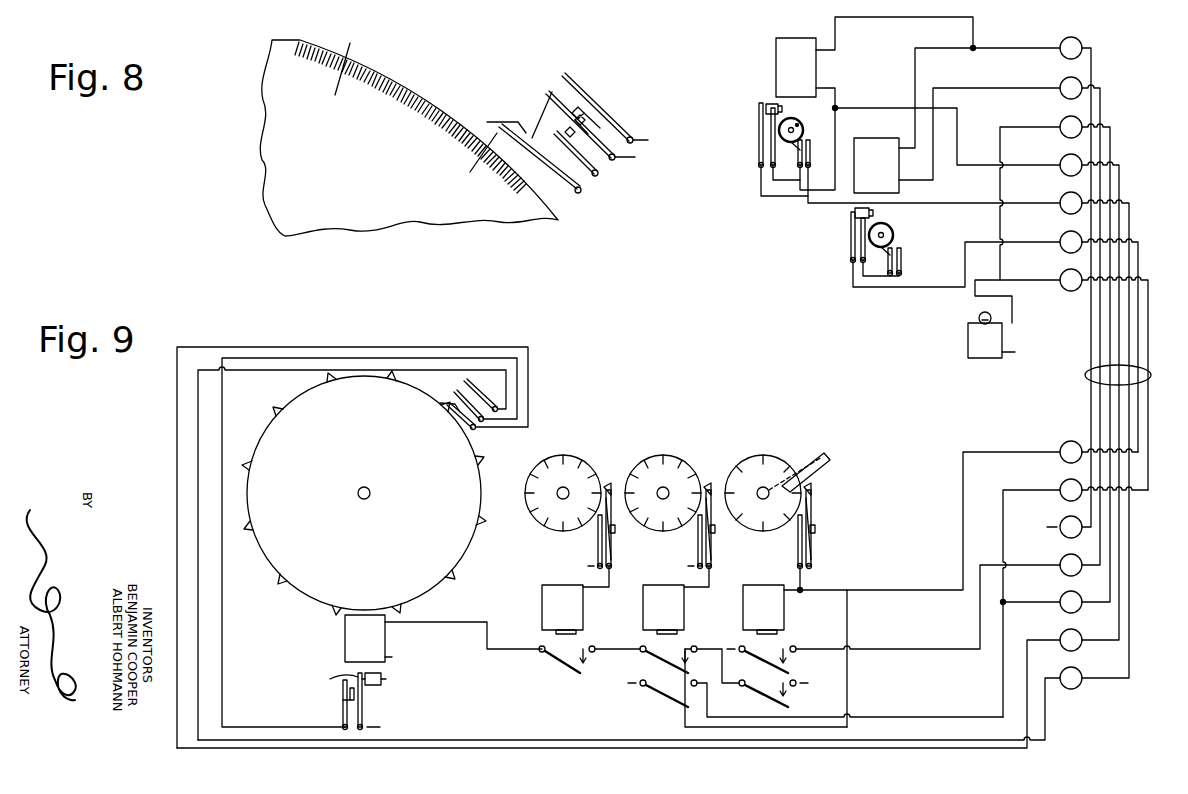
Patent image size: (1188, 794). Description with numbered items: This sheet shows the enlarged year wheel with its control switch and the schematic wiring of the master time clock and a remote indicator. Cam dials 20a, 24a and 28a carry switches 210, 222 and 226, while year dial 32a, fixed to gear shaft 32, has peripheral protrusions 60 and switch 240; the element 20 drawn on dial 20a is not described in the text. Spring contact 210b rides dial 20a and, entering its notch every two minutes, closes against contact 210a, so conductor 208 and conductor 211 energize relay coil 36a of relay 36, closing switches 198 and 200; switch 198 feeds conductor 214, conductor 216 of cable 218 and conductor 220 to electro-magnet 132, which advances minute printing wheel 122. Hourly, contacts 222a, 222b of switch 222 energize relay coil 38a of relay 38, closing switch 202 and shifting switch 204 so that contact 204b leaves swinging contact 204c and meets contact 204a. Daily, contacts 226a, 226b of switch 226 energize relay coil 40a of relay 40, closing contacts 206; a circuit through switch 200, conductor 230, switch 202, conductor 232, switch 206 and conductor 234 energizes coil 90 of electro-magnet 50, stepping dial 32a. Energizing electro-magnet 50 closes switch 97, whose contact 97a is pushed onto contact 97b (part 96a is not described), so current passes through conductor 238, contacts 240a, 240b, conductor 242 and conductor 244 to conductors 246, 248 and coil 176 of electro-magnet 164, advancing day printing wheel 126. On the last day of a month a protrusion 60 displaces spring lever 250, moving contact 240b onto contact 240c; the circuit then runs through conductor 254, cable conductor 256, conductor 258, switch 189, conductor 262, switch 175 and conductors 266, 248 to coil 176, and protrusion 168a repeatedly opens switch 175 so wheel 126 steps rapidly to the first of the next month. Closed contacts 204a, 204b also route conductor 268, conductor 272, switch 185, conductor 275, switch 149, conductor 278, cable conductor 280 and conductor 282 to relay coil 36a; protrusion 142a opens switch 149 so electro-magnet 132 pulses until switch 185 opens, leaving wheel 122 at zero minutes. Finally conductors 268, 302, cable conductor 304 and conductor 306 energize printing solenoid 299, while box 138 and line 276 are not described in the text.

In FIG. 9, the setting lever 20 is at (836, 456).
In FIG. 9, the cam dial 20a is at (769, 456).
In FIG. 9, the cam dial 24a is at (675, 456).
In FIG. 9, the cam dial 28a is at (573, 456).
In FIG. 9, the gear shaft 32 is at (370, 493).
In FIG. 8, the cam dial 32a is at (345, 44).
In FIG. 9, the cam dial 32a is at (465, 551).
In FIG. 9, the relay 36 is at (755, 597).
In FIG. 9, the relay coil 36a is at (771, 620).
In FIG. 9, the relay 38 is at (655, 597).
In FIG. 9, the relay coil 38a is at (671, 620).
In FIG. 9, the relay 40 is at (553, 597).
In FIG. 9, the relay coil 40a is at (570, 620).
In FIG. 9, the electro-magnet 50 is at (346, 689).
In FIG. 8, the protrusions 60 is at (500, 135).
In FIG. 9, the coil 90 is at (386, 622).
In FIG. 9, the contact bracket 96a is at (326, 678).
In FIG. 9, the switch 97 is at (348, 693).
In FIG. 9, the contact 97a is at (364, 696).
In FIG. 9, the contact 97b is at (350, 701).
In FIG. 9, the minute printing wheel 122 is at (893, 235).
In FIG. 9, the day printing wheel 126 is at (795, 125).
In FIG. 9, the electro-magnet 132 is at (888, 227).
In FIG. 9, the minutes clock mechanism 138 is at (876, 138).
In FIG. 9, the protrusion 142a is at (853, 214).
In FIG. 9, the switch 149 is at (851, 236).
In FIG. 9, the electro-magnet 164 is at (734, 88).
In FIG. 9, the protrusion 168a is at (766, 110).
In FIG. 9, the switch 175 is at (759, 136).
In FIG. 9, the coil 176 is at (776, 55).
In FIG. 9, the switch 185 is at (900, 258).
In FIG. 9, the switch 189 is at (802, 152).
In FIG. 9, the switch 198 is at (792, 657).
In FIG. 9, the switch 200 is at (793, 695).
In FIG. 9, the switch 202 is at (764, 686).
In FIG. 9, the switch 204 is at (656, 695).
In FIG. 9, the fixed contact 204a is at (688, 691).
In FIG. 9, the fixed contact 204b is at (690, 708).
In FIG. 9, the swinging contact 204c is at (685, 714).
In FIG. 9, the pair of contacts 206 is at (583, 668).
In FIG. 9, the conductor 208 is at (803, 585).
In FIG. 9, the switch 210 is at (820, 526).
In FIG. 9, the spring contact 210a is at (811, 552).
In FIG. 9, the contact 210b is at (812, 564).
In FIG. 9, the conductor 211 is at (847, 618).
In FIG. 9, the conductor 214 is at (898, 655).
In FIG. 9, the conductor 216 is at (1112, 553).
In FIG. 9, the cable 218 is at (1151, 375).
In FIG. 9, the conductor 220 is at (1005, 88).
In FIG. 9, the switch 222 is at (715, 526).
In FIG. 9, the contact 222a is at (699, 546).
In FIG. 9, the contact 222b is at (712, 538).
In FIG. 9, the switch 226 is at (614, 526).
In FIG. 9, the contact 226a is at (598, 545).
In FIG. 9, the contact 226b is at (611, 550).
In FIG. 9, the conductor 230 is at (762, 656).
In FIG. 9, the conductor 232 is at (640, 646).
In FIG. 9, the conductor 234 is at (458, 622).
In FIG. 9, the conductor 238 is at (222, 602).
In FIG. 8, the switch 240 is at (611, 115).
In FIG. 8, the contact 240a is at (596, 181).
In FIG. 9, the contact 240a is at (461, 423).
In FIG. 8, the contact 240b is at (626, 163).
In FIG. 9, the contact 240b is at (457, 393).
In FIG. 8, the contact 240c is at (631, 140).
In FIG. 9, the contact 240c is at (472, 396).
In FIG. 9, the conductor 242 is at (177, 421).
In FIG. 9, the conductor 244 is at (1118, 630).
In FIG. 9, the conductor 246 is at (983, 166).
In FIG. 9, the conductor 248 is at (837, 104).
In FIG. 8, the spring lever 250 is at (505, 124).
In FIG. 9, the spring lever 250 is at (447, 410).
In FIG. 9, the conductor 254 is at (198, 508).
In FIG. 9, the cable conductor 256 is at (1129, 668).
In FIG. 9, the conductor 258 is at (985, 204).
In FIG. 9, the conductor 262 is at (773, 181).
In FIG. 9, the conductor 266 is at (780, 197).
In FIG. 9, the conductor 268 is at (890, 717).
In FIG. 9, the conductor 272 is at (945, 288).
In FIG. 9, the conductor 275 is at (880, 277).
In FIG. 9, the lead 276 is at (1148, 468).
In FIG. 9, the conductor 278 is at (853, 287).
In FIG. 9, the cable conductor 280 is at (1133, 247).
In FIG. 9, the conductor 282 is at (963, 489).
In FIG. 9, the printing solenoid 299 is at (999, 366).
In FIG. 9, the conductor 302 is at (1012, 602).
In FIG. 9, the cable conductor 304 is at (1115, 582).
In FIG. 9, the conductor 306 is at (1003, 143).